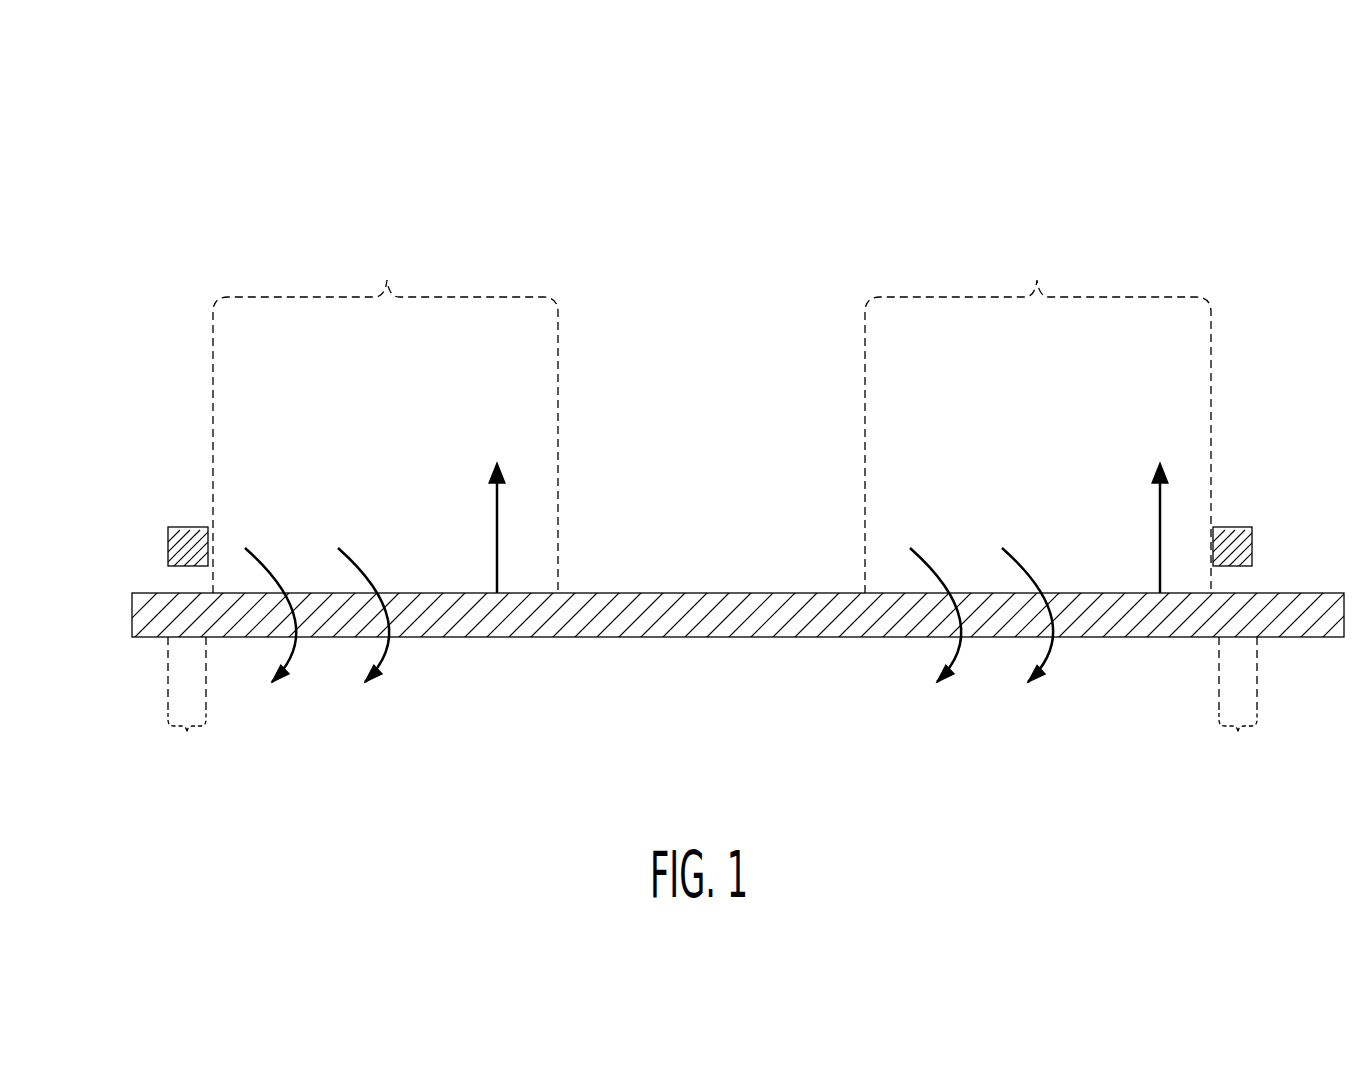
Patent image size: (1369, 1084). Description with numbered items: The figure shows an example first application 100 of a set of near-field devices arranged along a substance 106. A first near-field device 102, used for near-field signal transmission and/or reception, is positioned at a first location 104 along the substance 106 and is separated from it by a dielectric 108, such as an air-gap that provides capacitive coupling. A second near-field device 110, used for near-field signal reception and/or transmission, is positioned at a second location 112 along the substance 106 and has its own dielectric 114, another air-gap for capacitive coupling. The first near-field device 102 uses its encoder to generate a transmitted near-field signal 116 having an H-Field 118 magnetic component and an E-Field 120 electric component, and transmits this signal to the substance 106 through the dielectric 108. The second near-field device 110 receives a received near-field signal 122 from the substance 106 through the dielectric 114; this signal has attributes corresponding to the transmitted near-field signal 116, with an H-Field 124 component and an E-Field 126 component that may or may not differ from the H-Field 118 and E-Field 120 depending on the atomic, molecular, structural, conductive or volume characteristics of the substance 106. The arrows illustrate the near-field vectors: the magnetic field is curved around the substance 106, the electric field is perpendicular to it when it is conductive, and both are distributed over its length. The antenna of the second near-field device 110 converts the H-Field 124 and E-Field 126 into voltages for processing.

The first application 100 is at (213, 187).
The first near-field device 102 is at (185, 527).
The first location 104 is at (187, 705).
The substance 106 is at (711, 593).
The dielectric 108 is at (187, 582).
The second near-field device 110 is at (1232, 527).
The second location 112 is at (1238, 705).
The dielectric 114 is at (1243, 582).
The transmitted near-field signal 116 is at (385, 416).
The H-Field 118 is at (373, 575).
The E-Field 120 is at (497, 497).
The received near-field signal 122 is at (1038, 416).
The H-Field 124 is at (1045, 573).
The E-Field 126 is at (1160, 503).